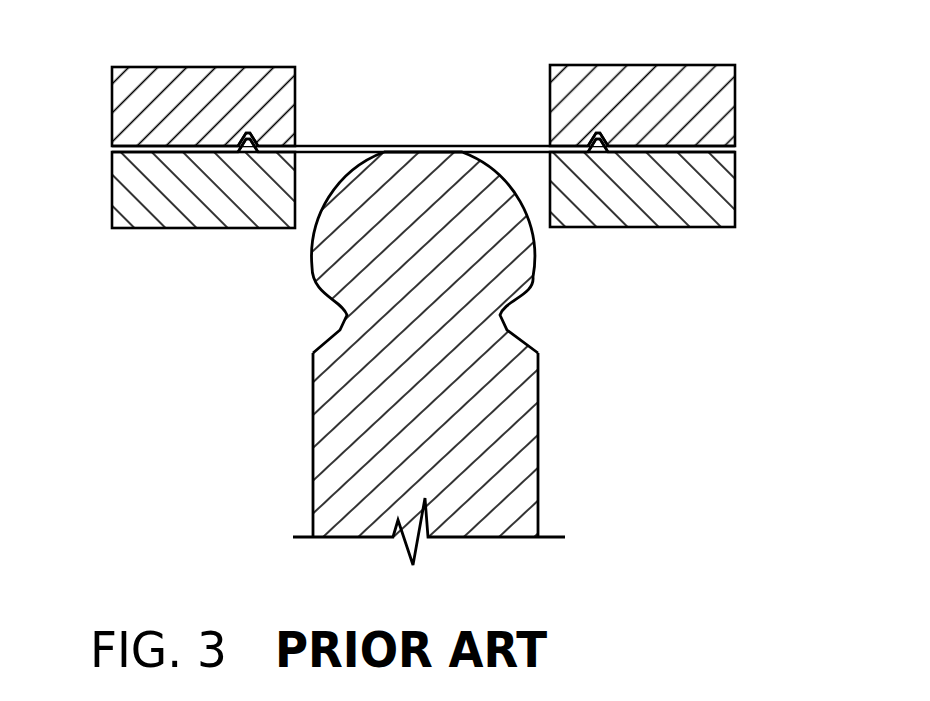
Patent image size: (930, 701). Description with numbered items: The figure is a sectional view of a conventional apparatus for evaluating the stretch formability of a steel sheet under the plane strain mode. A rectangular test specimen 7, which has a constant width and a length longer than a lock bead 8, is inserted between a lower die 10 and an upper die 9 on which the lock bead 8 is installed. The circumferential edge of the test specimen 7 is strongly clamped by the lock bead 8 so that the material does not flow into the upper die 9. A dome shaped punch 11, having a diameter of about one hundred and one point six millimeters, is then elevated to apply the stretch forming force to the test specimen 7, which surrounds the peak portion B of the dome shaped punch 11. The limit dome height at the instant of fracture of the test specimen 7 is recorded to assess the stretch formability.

The test specimen 7 is at (473, 147).
The lock bead 8 is at (247, 130).
The upper die 9 is at (139, 97).
The lower die 10 is at (138, 192).
The dome shaped punch 11 is at (513, 440).
The peak portion B is at (423, 150).